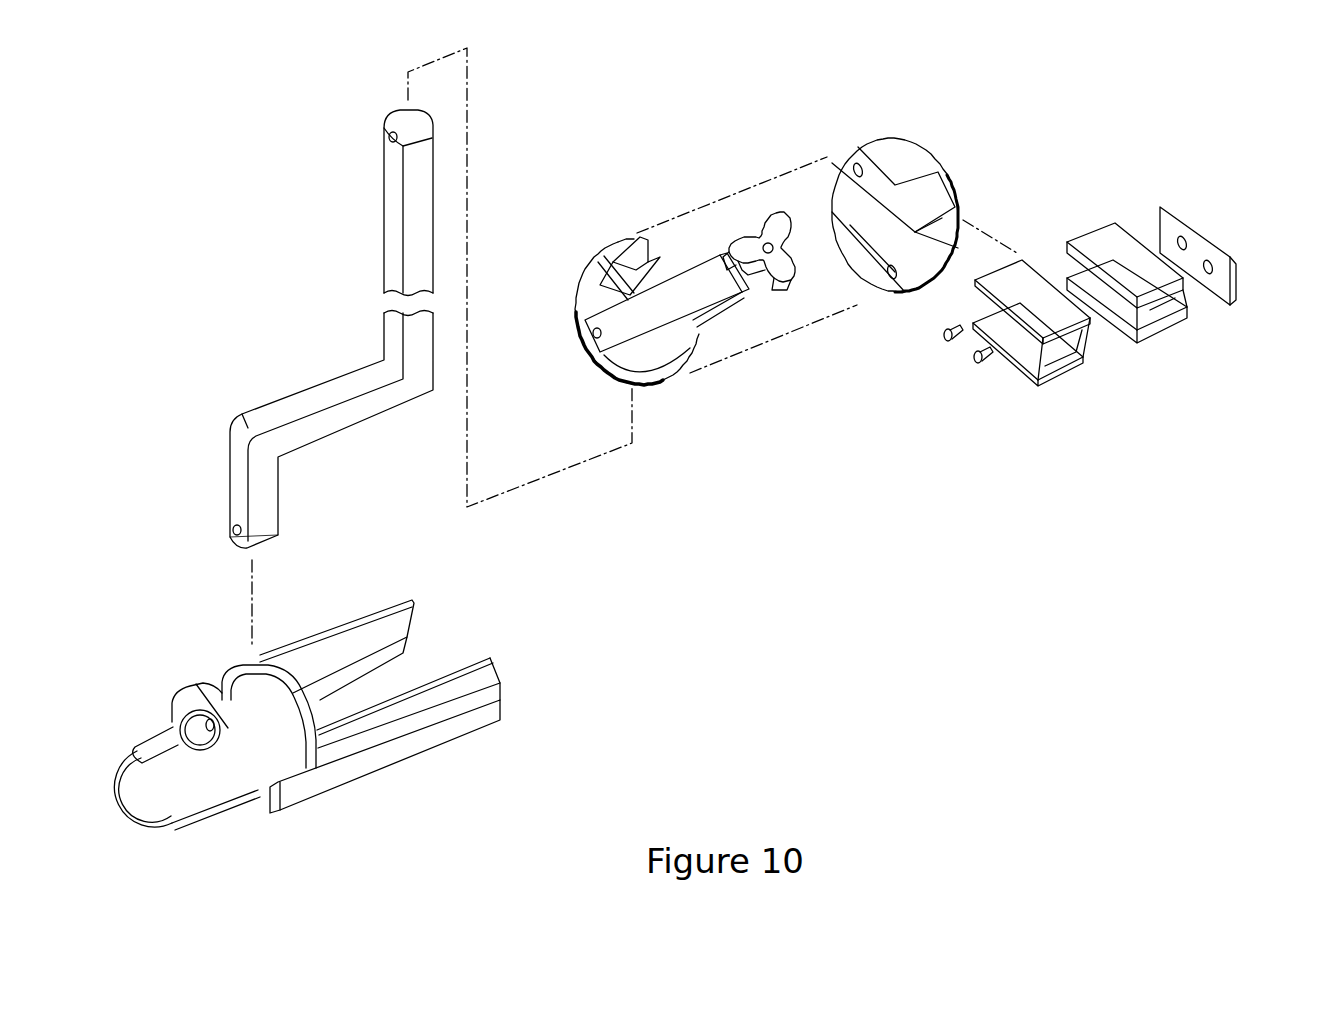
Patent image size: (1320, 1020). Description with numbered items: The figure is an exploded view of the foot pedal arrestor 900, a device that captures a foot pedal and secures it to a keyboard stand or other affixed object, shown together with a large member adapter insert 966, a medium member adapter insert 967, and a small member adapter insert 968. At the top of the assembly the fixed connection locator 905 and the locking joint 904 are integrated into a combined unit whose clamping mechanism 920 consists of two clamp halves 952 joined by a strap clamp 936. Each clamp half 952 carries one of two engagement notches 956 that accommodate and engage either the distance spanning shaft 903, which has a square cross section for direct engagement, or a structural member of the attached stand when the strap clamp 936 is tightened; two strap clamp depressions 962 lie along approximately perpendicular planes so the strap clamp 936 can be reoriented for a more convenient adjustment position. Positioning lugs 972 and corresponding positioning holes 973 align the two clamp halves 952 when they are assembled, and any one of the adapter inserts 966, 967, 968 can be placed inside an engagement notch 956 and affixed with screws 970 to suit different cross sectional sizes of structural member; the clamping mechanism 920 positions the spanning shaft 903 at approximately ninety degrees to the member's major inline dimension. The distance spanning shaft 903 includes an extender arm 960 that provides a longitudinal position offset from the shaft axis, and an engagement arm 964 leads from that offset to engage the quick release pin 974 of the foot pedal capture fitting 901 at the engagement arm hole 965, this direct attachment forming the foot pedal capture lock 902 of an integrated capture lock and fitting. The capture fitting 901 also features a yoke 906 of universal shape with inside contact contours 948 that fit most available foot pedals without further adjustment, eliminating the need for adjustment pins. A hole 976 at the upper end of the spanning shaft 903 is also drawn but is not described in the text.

The foot pedal arrestor 900 is at (226, 121).
The foot pedal capture fitting 901 is at (344, 730).
The foot pedal capture lock 902 is at (320, 803).
The distance spanning shaft 903 is at (364, 195).
The locking joint 904 is at (638, 281).
The fixed connection locator 905 is at (879, 204).
The yoke 906 is at (470, 722).
The clamping mechanism 920 is at (610, 272).
The strap clamp 936 is at (720, 307).
The inside contact contours 948 is at (445, 668).
The clamp halves 952 is at (688, 352).
The engagement notches 956 is at (623, 262).
The extender arm 960 is at (290, 346).
The strap clamp depressions 962 is at (636, 374).
The engagement arm 964 is at (213, 516).
The engagement arm hole 965 is at (236, 535).
The large member adapter insert 966 is at (1236, 288).
The medium member adapter insert 967 is at (1088, 352).
The small member adapter insert 968 is at (1165, 327).
The screws 970 is at (975, 360).
The positioning lugs 972 is at (642, 252).
The positioning holes 973 is at (890, 280).
The quick release pin 974 is at (195, 684).
The pivot hole 976 is at (390, 133).